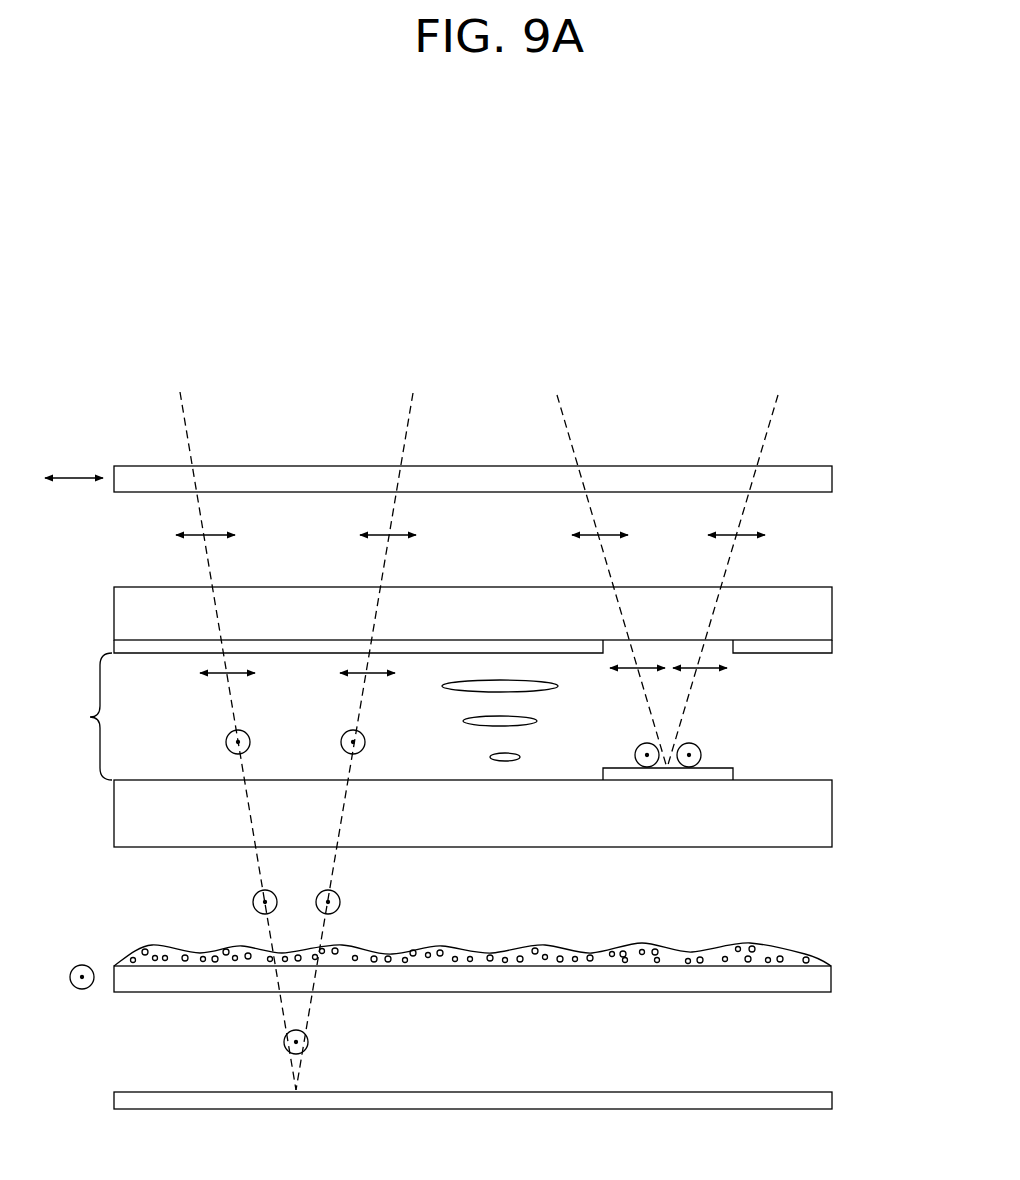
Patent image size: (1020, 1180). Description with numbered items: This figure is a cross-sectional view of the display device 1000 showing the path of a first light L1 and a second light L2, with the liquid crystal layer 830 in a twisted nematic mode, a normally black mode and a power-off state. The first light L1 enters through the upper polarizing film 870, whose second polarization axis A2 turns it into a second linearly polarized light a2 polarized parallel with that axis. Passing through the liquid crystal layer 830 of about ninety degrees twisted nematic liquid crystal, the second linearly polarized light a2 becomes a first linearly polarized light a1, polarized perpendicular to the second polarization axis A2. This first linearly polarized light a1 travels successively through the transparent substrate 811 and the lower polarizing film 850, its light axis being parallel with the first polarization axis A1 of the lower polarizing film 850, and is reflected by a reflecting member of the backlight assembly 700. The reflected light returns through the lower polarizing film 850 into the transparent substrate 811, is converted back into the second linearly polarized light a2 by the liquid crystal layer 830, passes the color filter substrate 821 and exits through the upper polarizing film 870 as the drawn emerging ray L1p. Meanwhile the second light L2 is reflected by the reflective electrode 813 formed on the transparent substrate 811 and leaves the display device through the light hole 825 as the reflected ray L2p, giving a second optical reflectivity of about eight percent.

The display device 1000 is at (518, 156).
The upper polarizing film 870 is at (826, 478).
The color filter substrate 821 is at (832, 617).
The light hole 825 is at (724, 647).
The liquid crystal layer 830 is at (385, 716).
The reflective electrode 813 is at (722, 772).
The transparent substrate 811 is at (832, 813).
The lower polarizing film 850 is at (829, 979).
The backlight assembly 700 is at (828, 1100).
The first light L1 is at (180, 386).
The first light (L1') at shifted position L1p is at (440, 373).
The second light L2 is at (557, 388).
The second light (L2') at shifted position L2p is at (810, 375).
The first linearly polarized light a1 is at (251, 742).
The second linearly polarized light a2 is at (213, 536).
The first polarization axis A1 is at (82, 964).
The second polarization axis A2 is at (71, 477).